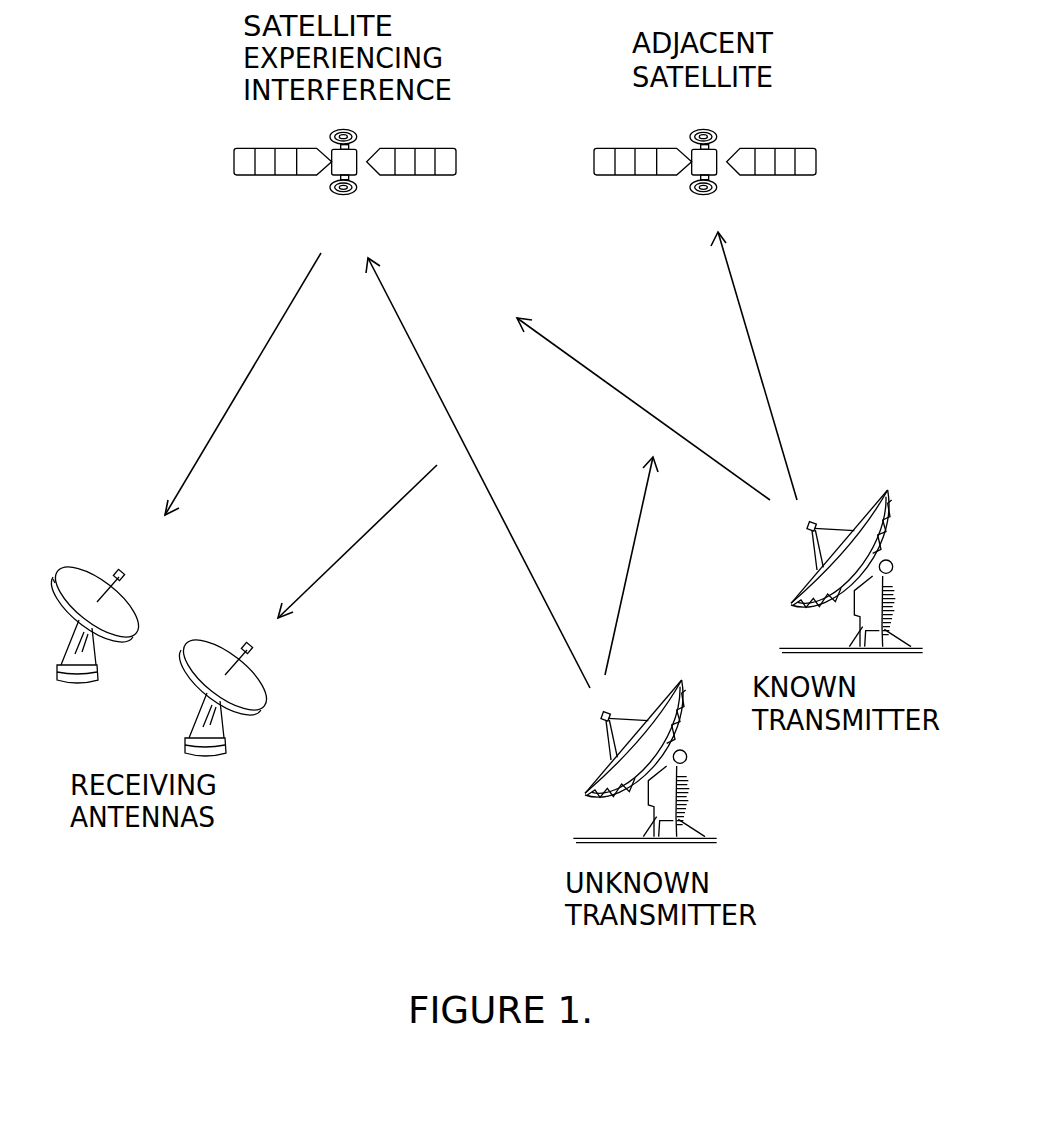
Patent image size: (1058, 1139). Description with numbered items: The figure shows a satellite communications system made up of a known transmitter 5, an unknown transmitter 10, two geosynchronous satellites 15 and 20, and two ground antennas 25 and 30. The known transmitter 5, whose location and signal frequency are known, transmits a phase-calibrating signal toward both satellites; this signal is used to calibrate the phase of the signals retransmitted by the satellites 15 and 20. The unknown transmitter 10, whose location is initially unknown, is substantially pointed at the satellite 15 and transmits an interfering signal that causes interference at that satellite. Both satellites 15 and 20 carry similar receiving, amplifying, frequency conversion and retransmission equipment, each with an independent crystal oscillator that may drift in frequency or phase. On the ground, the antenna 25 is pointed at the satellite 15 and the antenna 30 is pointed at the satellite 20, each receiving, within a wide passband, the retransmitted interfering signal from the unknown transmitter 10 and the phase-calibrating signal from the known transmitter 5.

The known transmitter 5 is at (885, 492).
The unknown transmitter 10 is at (585, 793).
The geosynchronous satellite 15 is at (235, 167).
The geosynchronous satellite 20 is at (595, 165).
The ground antenna 25 is at (80, 567).
The ground antenna 30 is at (190, 640).